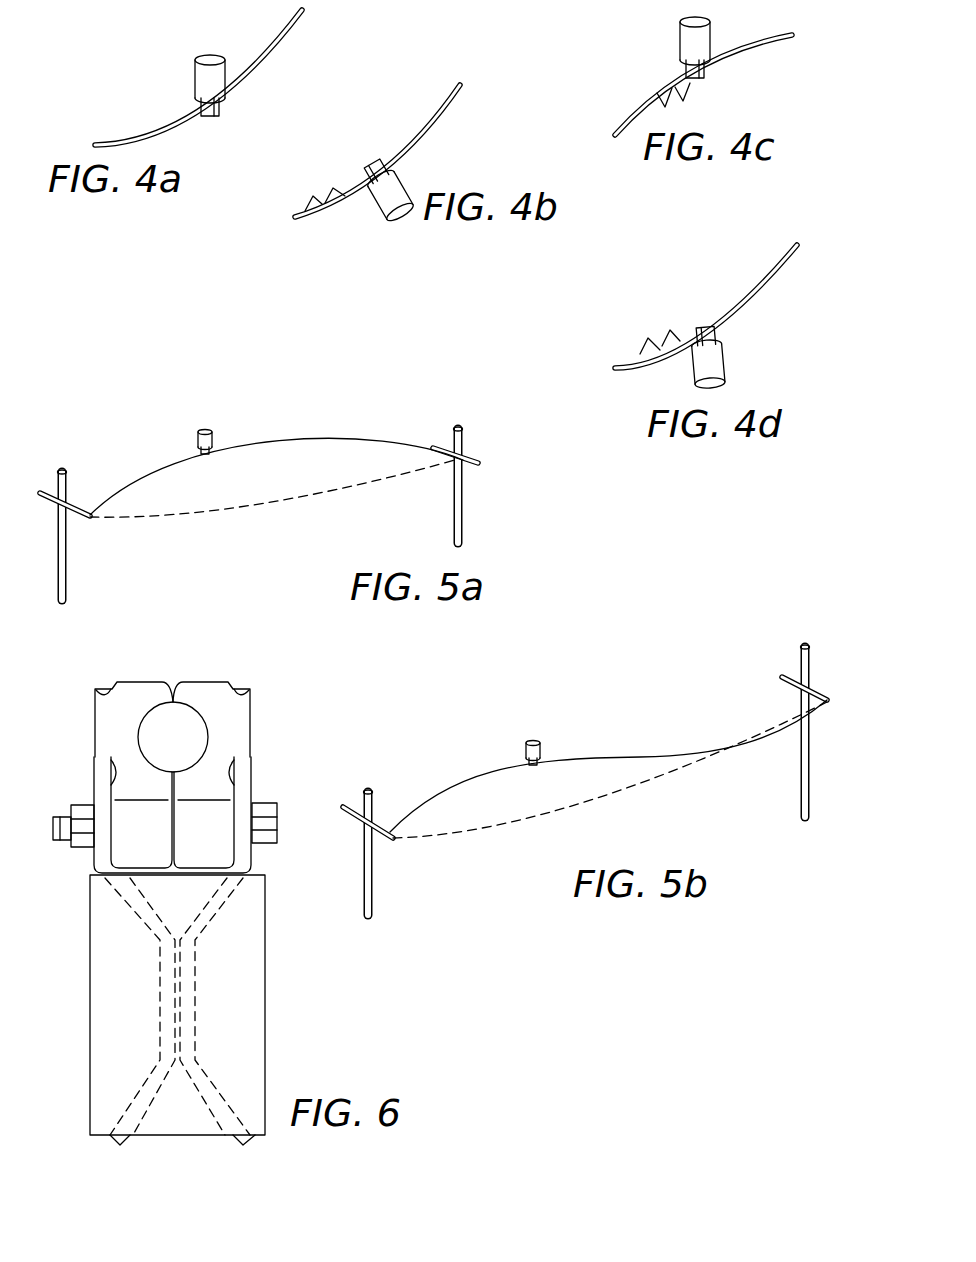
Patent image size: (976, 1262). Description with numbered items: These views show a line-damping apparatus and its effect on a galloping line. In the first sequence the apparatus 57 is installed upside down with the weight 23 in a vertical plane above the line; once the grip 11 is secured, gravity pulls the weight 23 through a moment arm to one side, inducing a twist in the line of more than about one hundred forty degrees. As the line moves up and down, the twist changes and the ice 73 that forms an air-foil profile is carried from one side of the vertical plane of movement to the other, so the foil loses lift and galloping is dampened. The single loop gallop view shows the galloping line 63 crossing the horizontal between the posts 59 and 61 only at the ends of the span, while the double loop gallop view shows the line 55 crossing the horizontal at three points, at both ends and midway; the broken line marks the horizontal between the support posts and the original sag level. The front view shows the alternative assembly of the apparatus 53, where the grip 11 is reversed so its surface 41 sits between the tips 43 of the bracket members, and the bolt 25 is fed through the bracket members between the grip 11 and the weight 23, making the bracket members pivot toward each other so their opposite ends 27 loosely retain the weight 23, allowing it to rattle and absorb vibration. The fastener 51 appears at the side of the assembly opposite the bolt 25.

In FIG. 4a, the weight 23 is at (200, 95).
In FIG. 4b, the weight 23 is at (402, 193).
In FIG. 4c, the weight 23 is at (685, 56).
In FIG. 4d, the weight 23 is at (701, 380).
In FIG. 6, the weight 23 is at (252, 980).
In FIG. 4b, the ice 73 is at (340, 188).
In FIG. 4c, the ice 73 is at (680, 94).
In FIG. 4d, the ice 73 is at (655, 340).
In FIG. 5a, the apparatus 57 is at (208, 455).
In FIG. 5b, the apparatus 57 is at (535, 767).
In FIG. 5a, the galloping line 63 is at (372, 413).
In FIG. 5a, the post 59 is at (67, 553).
In FIG. 5a, the post 61 is at (462, 499).
In FIG. 5b, the line 55 is at (603, 757).
In FIG. 6, the surface 41 is at (152, 681).
In FIG. 6, the tips 43 is at (100, 688).
In FIG. 6, the bolt 51 is at (80, 805).
In FIG. 6, the bolt 25 is at (270, 803).
In FIG. 6, the grip 11 is at (160, 835).
In FIG. 6, the opposite ends 27 is at (120, 1145).
In FIG. 6, the apparatus 53 is at (310, 965).